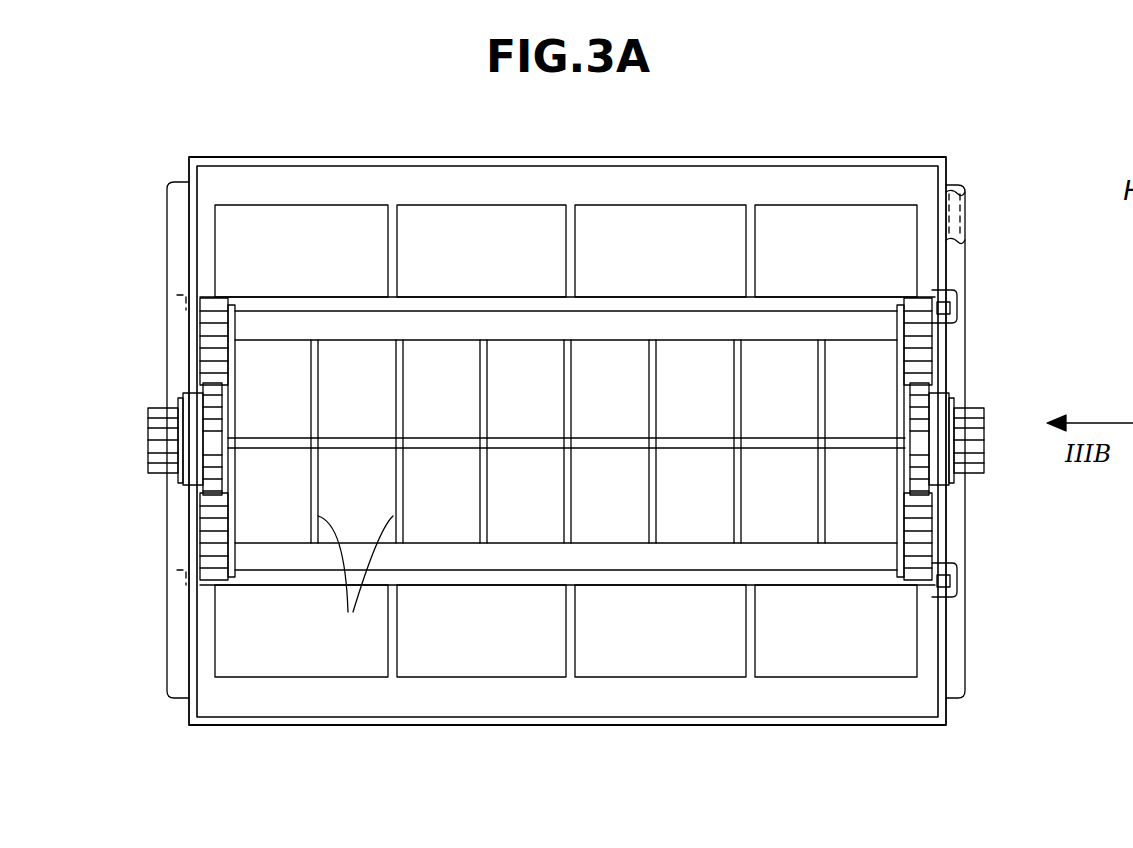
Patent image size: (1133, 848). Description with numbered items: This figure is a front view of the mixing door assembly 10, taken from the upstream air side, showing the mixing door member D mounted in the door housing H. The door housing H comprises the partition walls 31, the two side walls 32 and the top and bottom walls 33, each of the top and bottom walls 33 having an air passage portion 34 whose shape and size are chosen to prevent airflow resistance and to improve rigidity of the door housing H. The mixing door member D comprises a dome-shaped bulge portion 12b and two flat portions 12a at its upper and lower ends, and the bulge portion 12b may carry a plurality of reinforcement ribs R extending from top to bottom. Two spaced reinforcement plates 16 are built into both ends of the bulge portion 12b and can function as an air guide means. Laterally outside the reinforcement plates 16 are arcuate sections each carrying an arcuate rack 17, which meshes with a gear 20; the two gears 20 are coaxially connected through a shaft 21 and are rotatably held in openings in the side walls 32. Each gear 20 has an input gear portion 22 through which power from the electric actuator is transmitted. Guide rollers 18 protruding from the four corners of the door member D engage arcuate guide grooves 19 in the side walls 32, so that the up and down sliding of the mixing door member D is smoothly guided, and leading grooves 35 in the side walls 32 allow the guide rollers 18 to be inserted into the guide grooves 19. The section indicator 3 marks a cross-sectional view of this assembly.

The cassette 10 is at (758, 797).
The flat portions 12a is at (523, 558).
The bulge portion 12b is at (440, 518).
The reinforcement plates 16 is at (237, 518).
The arcuate rack 17 is at (213, 322).
The guide rollers 18 is at (185, 300).
The guide grooves 19 is at (965, 218).
The gears 20 is at (214, 402).
The shaft 21 is at (695, 446).
The input gear portion 22 is at (165, 441).
The partition walls 31 is at (826, 185).
The side walls 32 is at (183, 657).
The top and bottom walls 33 is at (340, 156).
The air passage portion 34 is at (299, 255).
The leading grooves 35 is at (1122, 444).
The apparatus 3 is at (1129, 528).
The mixing door member D is at (676, 297).
The door housing H is at (906, 159).
The reinforcement ribs R is at (355, 579).